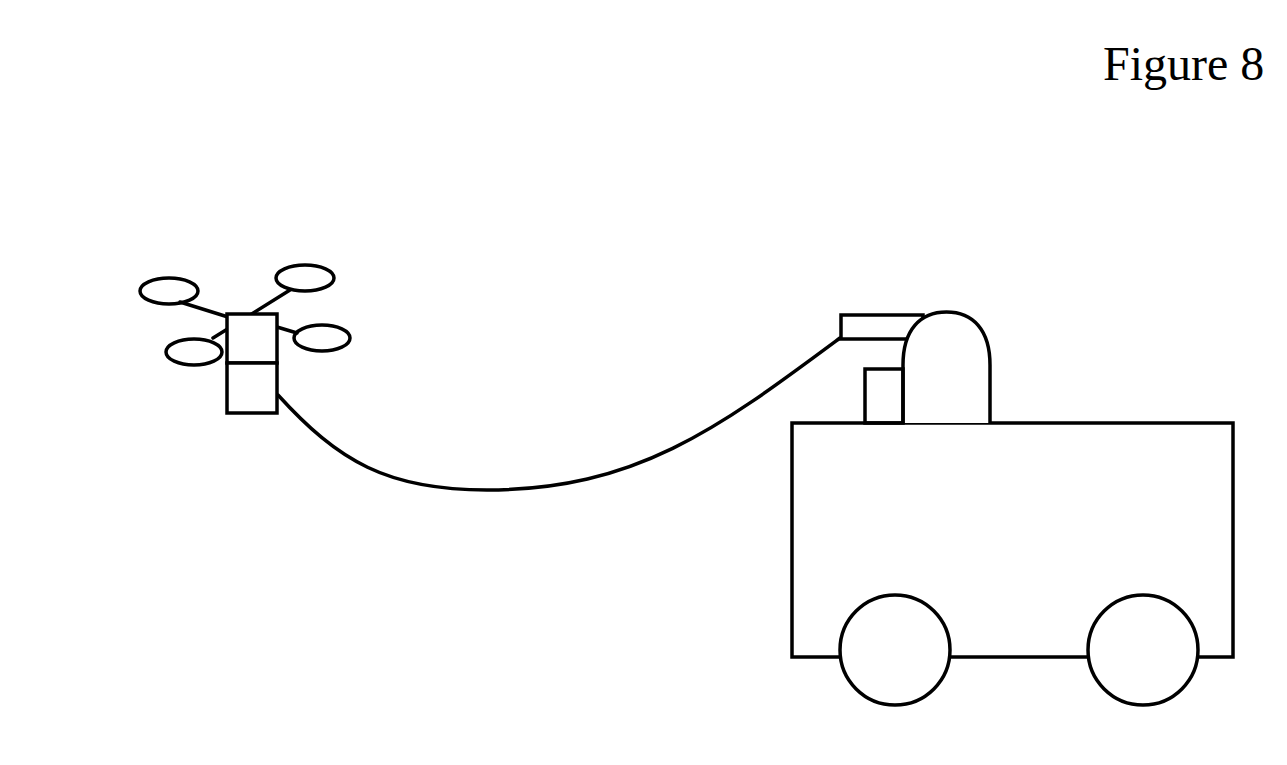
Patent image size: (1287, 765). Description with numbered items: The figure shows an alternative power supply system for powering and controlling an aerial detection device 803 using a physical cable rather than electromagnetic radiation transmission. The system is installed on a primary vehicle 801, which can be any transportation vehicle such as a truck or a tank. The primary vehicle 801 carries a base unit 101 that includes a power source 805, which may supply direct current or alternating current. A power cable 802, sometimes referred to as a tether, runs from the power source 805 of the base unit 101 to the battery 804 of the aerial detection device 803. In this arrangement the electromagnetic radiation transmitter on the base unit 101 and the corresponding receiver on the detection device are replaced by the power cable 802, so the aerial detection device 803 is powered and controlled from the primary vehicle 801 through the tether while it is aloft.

The base unit 101 is at (952, 377).
The primary vehicle 801 is at (1019, 537).
The power cable 802 is at (625, 470).
The aerial detection device 803 is at (267, 404).
The battery 804 is at (245, 413).
The power source 805 is at (895, 327).